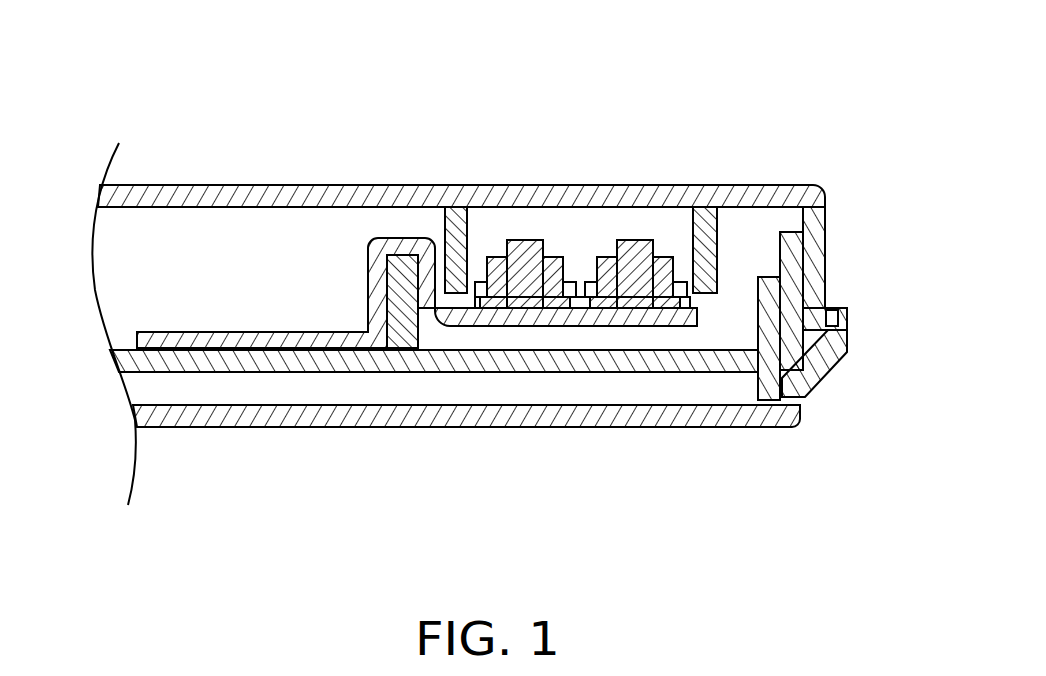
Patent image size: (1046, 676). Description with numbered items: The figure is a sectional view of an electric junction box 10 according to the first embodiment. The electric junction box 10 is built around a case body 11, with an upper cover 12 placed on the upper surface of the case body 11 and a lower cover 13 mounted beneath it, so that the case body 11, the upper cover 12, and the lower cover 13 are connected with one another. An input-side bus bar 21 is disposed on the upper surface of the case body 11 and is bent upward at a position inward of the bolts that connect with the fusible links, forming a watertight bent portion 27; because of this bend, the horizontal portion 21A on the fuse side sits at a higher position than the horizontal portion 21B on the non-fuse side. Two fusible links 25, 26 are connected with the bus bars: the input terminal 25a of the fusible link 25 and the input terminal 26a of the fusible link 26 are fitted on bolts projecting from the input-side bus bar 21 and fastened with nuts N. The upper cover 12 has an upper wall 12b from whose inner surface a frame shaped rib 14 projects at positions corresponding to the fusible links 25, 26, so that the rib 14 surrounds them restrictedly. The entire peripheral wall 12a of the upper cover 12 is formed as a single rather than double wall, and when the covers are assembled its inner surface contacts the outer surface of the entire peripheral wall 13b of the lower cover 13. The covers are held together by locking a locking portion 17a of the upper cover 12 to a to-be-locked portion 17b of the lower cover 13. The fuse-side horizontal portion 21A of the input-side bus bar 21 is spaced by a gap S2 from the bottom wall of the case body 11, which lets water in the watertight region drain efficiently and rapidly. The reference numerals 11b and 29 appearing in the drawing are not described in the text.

The electric junction box 10 is at (147, 127).
The case body 11 is at (201, 372).
The protrusion of base plate 11b is at (838, 326).
The upper cover 12 is at (792, 185).
The entire peripheral wall 12a is at (822, 238).
The upper wall 12b is at (688, 185).
The lower cover 13 is at (605, 418).
The entire peripheral wall 13b is at (398, 185).
The frame shaped rib 14 is at (473, 233).
The locking portion 17a is at (848, 352).
The to-be-locked portion 17b is at (850, 340).
The input-side bus bar 21 is at (173, 330).
The horizontal portion 21A is at (462, 327).
The horizontal portion 21B is at (212, 332).
The fusible link 25 is at (525, 309).
The input terminal 25a is at (565, 305).
The fusible link 26 is at (668, 312).
The input terminal 26a is at (688, 312).
The watertight bent portion 27 is at (368, 256).
The gap 29 is at (614, 225).
The nut N is at (820, 217).
The gap S2 is at (520, 337).